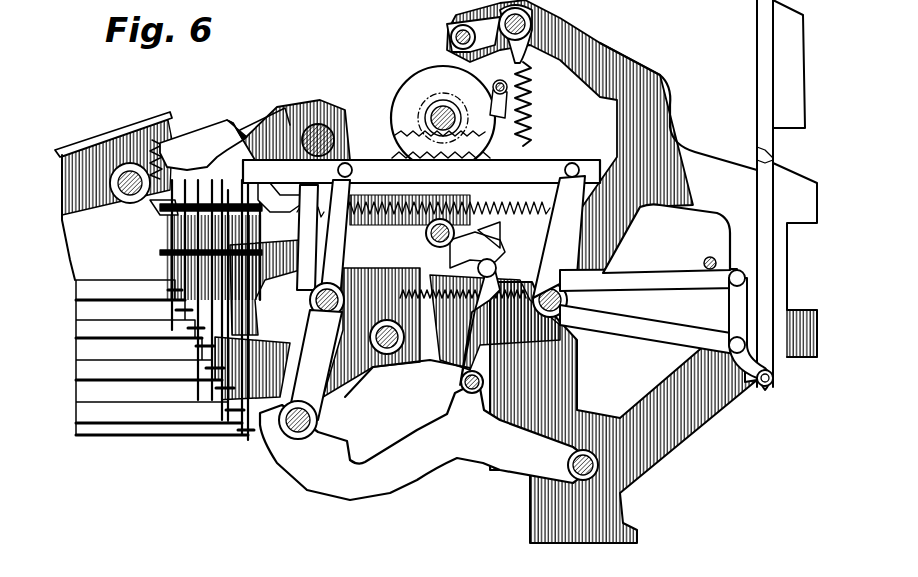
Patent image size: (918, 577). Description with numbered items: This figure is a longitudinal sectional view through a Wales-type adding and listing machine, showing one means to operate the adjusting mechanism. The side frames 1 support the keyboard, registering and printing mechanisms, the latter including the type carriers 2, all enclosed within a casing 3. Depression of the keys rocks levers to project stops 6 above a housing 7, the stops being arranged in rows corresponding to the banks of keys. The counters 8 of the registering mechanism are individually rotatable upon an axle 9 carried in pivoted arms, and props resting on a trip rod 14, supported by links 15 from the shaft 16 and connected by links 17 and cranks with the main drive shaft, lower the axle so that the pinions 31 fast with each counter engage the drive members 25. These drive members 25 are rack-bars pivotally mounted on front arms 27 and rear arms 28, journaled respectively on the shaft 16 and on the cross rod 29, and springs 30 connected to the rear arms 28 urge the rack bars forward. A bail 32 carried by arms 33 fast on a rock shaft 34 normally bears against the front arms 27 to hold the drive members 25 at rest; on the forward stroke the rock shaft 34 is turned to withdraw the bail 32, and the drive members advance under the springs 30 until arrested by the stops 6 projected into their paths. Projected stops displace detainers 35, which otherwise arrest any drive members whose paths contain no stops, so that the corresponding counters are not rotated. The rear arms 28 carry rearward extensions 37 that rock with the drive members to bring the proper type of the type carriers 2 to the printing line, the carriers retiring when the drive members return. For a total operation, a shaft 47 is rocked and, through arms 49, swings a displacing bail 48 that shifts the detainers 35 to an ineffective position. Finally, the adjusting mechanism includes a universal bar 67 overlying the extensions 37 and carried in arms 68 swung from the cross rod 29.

The side frames 1 is at (636, 72).
The type carriers 2 is at (762, 70).
The casing 3 is at (148, 357).
The stops 6 is at (225, 262).
The housing 7 is at (163, 232).
The counters 8 is at (420, 82).
The axle 9 is at (452, 126).
The trip rod 14 is at (318, 423).
The links 15 is at (315, 365).
The shaft 16 is at (330, 283).
The links 17 is at (266, 438).
The drive members 25 is at (280, 118).
The front arms 27 is at (323, 240).
The rear arms 28 is at (559, 237).
The cross rod 29 is at (568, 305).
The springs 30 is at (479, 136).
The pinions 31 is at (428, 130).
The bail 32 is at (423, 180).
The arms 33 is at (275, 186).
The rock shaft 34 is at (318, 125).
The detainers 35 is at (203, 145).
The rearward extensions 37 is at (666, 329).
The shaft 47 is at (130, 170).
The displacing bail 48 is at (152, 205).
The arms 49 is at (178, 144).
The universal bar 67 is at (711, 256).
The arms 68 is at (705, 262).